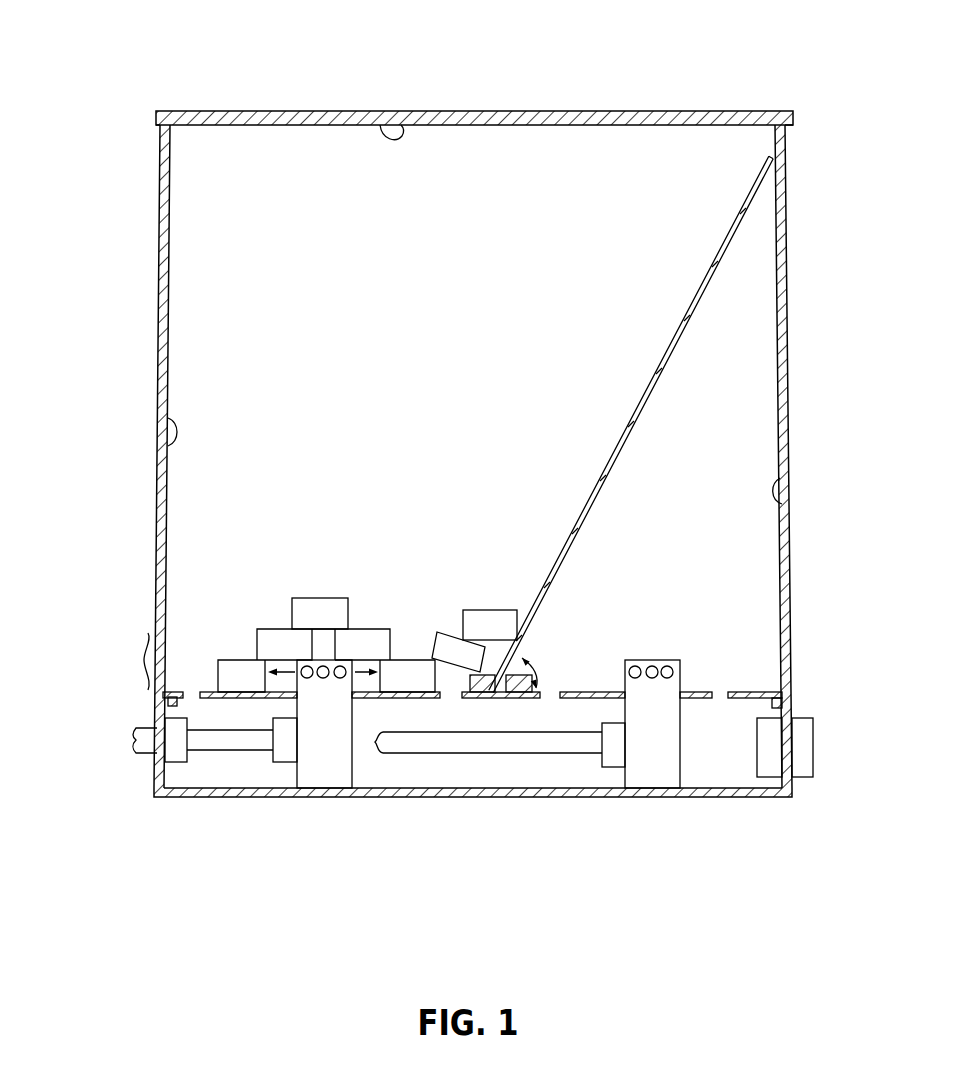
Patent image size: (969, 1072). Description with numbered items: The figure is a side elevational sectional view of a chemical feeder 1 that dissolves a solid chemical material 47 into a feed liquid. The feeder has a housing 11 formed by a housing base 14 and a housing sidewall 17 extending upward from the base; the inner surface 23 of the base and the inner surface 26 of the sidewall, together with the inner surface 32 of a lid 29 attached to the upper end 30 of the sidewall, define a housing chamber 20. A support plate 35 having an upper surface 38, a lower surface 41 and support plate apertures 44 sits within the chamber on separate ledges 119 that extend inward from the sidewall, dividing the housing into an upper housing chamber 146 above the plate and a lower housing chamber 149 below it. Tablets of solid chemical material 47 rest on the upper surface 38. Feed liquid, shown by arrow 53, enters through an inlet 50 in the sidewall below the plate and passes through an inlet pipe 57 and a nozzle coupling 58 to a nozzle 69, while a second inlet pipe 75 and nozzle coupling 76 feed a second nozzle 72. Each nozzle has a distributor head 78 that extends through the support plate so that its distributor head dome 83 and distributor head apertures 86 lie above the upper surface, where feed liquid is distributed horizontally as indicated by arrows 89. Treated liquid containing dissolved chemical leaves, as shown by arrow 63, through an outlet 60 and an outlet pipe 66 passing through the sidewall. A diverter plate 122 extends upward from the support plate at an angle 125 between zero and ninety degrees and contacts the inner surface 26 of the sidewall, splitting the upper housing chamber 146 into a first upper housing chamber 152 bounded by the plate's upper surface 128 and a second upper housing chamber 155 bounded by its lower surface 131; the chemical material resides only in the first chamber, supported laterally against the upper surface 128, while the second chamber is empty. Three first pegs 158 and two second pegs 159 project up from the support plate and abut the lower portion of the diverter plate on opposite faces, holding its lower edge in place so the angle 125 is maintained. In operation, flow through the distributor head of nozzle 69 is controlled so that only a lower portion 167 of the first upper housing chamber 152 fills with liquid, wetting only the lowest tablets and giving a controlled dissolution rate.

The chemical feeder 1 is at (118, 828).
The housing 11 is at (105, 478).
The housing base 14 is at (525, 797).
The housing sidewall 17 is at (160, 388).
The housing chamber 20 is at (240, 263).
The inner surface of housing base 23 is at (447, 778).
The inner surface of housing sidewall 26 is at (163, 437).
The lid 29 is at (520, 120).
The upper end of housing sidewall 30 is at (162, 130).
The inner surface of lid 32 is at (397, 130).
The support plate 35 is at (232, 692).
The upper surface of support plate 38 is at (208, 690).
The lower surface of support plate 41 is at (480, 698).
The support plate apertures 44 is at (452, 700).
The solid chemical material 47 is at (318, 600).
The inlet 50 is at (133, 750).
The arrow indicating feed liquid 53 is at (113, 738).
The inlet pipe 57 is at (223, 760).
The nozzle coupling 58 is at (285, 762).
The outlet 60 is at (815, 725).
The arrow indicating treated liquid 63 is at (862, 745).
The outlet pipe 66 is at (805, 778).
The nozzle 69 is at (348, 768).
The nozzle 72 is at (670, 765).
The inlet pipe 75 is at (515, 742).
The nozzle coupling 76 is at (612, 767).
The distributor head 78 is at (688, 598).
The distributor head dome 83 is at (648, 660).
The distributor head apertures 86 is at (322, 678).
The arrows indicating horizontal distribution 89 is at (275, 655).
The ledges 119 is at (176, 703).
The diverter plate 122 is at (635, 415).
The angle 125 is at (543, 660).
The upper surface of diverter plate 128 is at (605, 470).
The lower surface of diverter plate 131 is at (602, 502).
The upper housing chamber 146 is at (415, 233).
The lower housing chamber 149 is at (390, 786).
The first upper housing chamber 152 is at (375, 343).
The second upper housing chamber 155 is at (703, 438).
The first pegs 158 is at (440, 640).
The second pegs 159 is at (508, 692).
The lower portion of first upper housing chamber 167 is at (145, 660).